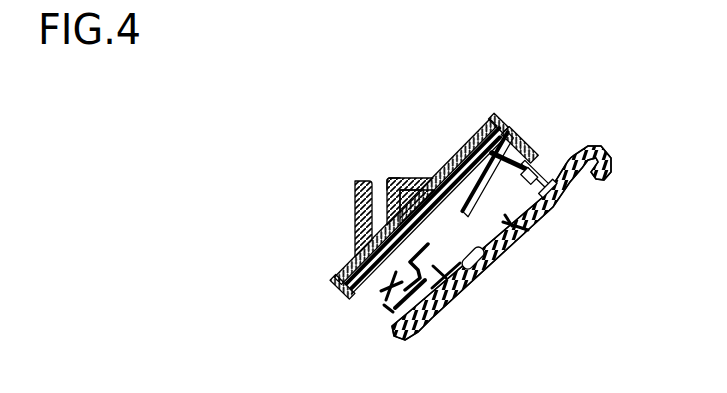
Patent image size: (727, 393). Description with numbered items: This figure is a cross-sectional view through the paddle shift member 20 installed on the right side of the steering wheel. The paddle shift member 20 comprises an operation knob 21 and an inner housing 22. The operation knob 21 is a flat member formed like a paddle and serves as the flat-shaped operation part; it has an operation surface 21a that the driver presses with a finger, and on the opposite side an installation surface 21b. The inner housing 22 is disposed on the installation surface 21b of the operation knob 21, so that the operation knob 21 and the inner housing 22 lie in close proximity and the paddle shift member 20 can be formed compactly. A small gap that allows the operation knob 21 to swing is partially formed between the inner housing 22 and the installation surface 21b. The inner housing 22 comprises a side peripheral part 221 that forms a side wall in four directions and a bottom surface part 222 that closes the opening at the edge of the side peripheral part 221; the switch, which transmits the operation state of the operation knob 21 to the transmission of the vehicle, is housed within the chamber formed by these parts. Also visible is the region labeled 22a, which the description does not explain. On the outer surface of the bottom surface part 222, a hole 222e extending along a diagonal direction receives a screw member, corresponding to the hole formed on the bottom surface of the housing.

The paddle shift member 20 is at (536, 90).
The operation knob 21 is at (612, 168).
The operation surface 21a is at (543, 217).
The installation surface 21b is at (566, 164).
The inner housing 22 is at (503, 117).
The cover wall 22a is at (355, 202).
The side peripheral part 221 is at (522, 132).
The bottom surface part 222 is at (440, 178).
The hole 222e is at (373, 178).